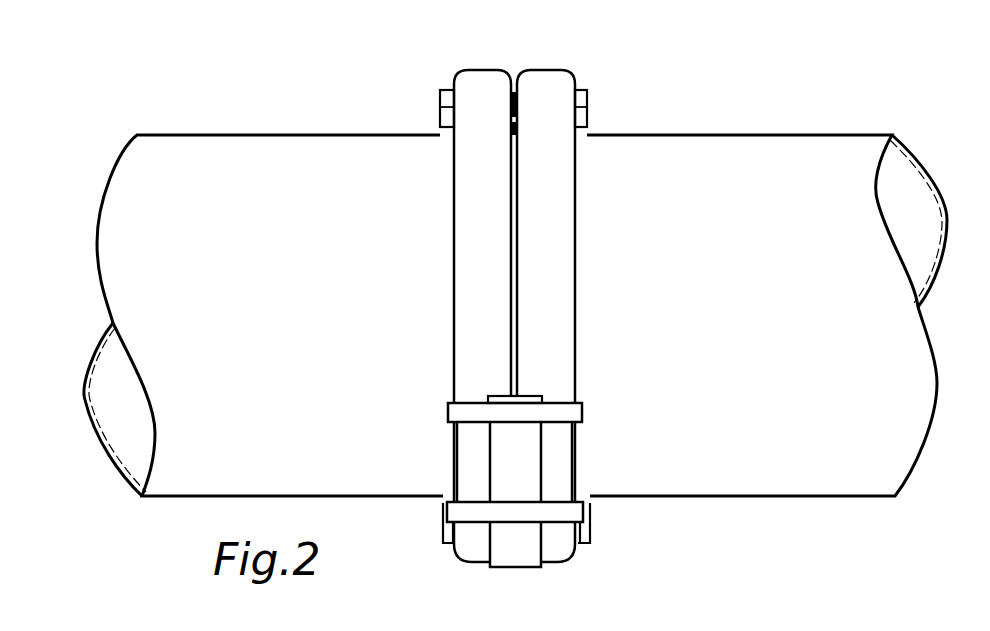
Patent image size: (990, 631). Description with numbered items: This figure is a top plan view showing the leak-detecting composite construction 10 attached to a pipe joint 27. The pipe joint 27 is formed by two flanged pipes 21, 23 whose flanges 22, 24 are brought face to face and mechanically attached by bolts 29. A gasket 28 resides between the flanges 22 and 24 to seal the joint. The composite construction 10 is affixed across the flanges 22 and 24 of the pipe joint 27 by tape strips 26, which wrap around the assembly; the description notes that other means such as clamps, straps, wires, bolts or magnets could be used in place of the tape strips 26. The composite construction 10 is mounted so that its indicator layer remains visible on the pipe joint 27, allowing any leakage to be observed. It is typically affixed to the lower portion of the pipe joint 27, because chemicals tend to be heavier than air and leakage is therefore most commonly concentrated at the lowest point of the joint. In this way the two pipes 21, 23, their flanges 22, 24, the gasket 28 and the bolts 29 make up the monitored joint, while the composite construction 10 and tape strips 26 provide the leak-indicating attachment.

The composite construction 10 is at (525, 443).
The flanged pipe 21 is at (232, 158).
The flange 22 is at (465, 195).
The flanged pipe 23 is at (722, 155).
The flange 24 is at (563, 215).
The tape strips 26 is at (447, 513).
The pipe joint 27 is at (513, 72).
The gasket 28 is at (518, 140).
The bolts 29 is at (588, 107).